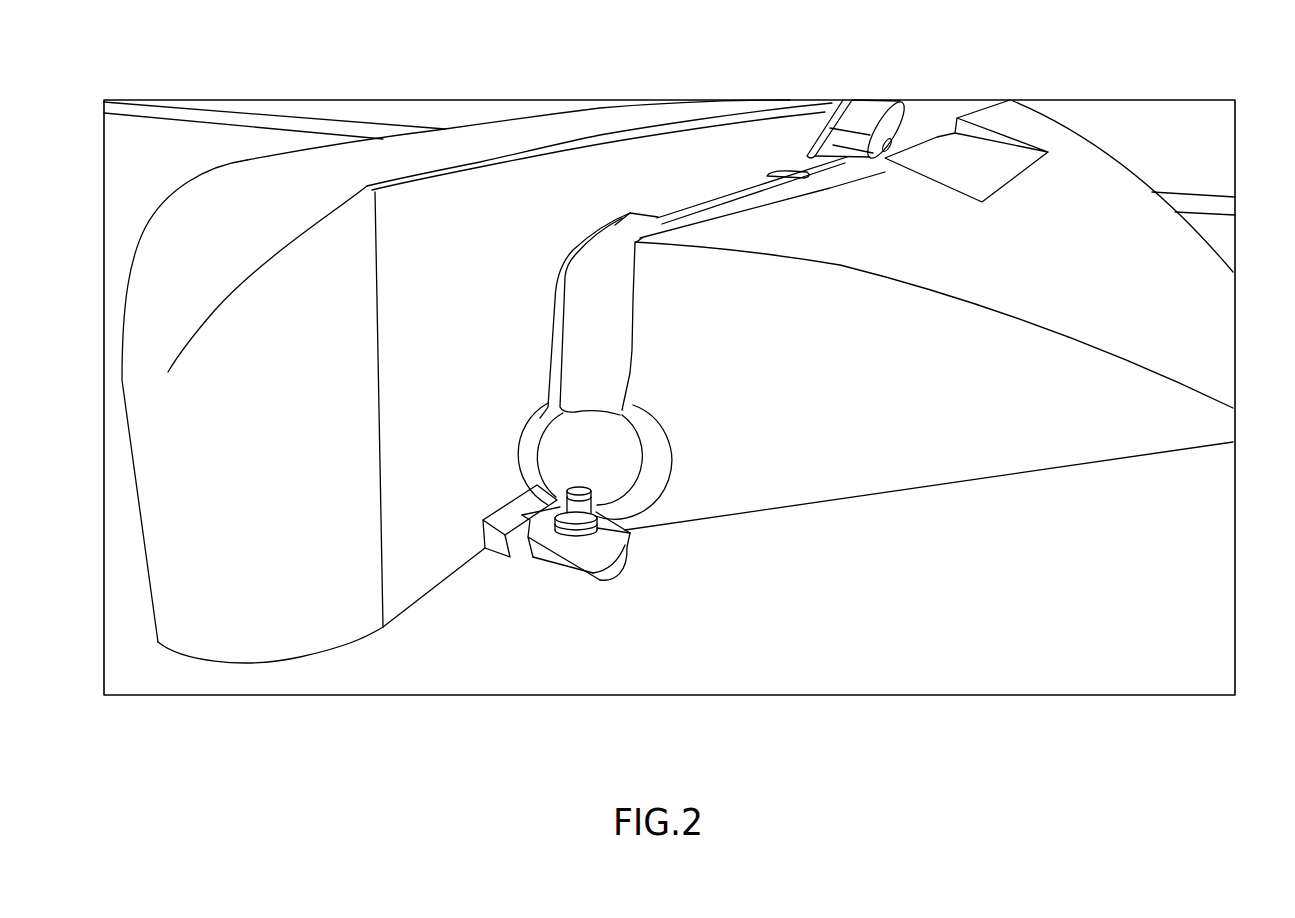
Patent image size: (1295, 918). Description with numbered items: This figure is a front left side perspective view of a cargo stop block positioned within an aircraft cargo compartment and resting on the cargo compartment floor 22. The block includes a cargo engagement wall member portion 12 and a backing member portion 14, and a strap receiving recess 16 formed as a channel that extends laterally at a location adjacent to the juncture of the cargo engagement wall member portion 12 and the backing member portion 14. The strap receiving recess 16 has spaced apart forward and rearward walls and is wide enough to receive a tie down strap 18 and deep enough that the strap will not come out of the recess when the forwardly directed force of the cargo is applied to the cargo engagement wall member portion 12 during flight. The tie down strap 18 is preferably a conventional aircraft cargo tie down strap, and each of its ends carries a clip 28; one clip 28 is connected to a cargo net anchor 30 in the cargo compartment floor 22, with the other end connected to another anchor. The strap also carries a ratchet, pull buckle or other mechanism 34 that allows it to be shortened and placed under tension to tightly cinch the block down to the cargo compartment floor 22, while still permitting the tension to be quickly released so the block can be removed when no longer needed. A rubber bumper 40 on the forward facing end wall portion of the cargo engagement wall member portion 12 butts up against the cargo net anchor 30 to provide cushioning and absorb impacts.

The cargo engagement wall member portion 12 is at (486, 142).
The backing member portion 14 is at (1138, 212).
The strap receiving recess 16 is at (565, 253).
The tie down strap 18 is at (753, 192).
The cargo compartment floor 22 is at (912, 597).
The clip 28 is at (647, 478).
The cargo net anchor 30 is at (560, 573).
The ratchet, pull buckle or other mechanism 34 is at (860, 108).
The rubber bumper 40 is at (485, 560).